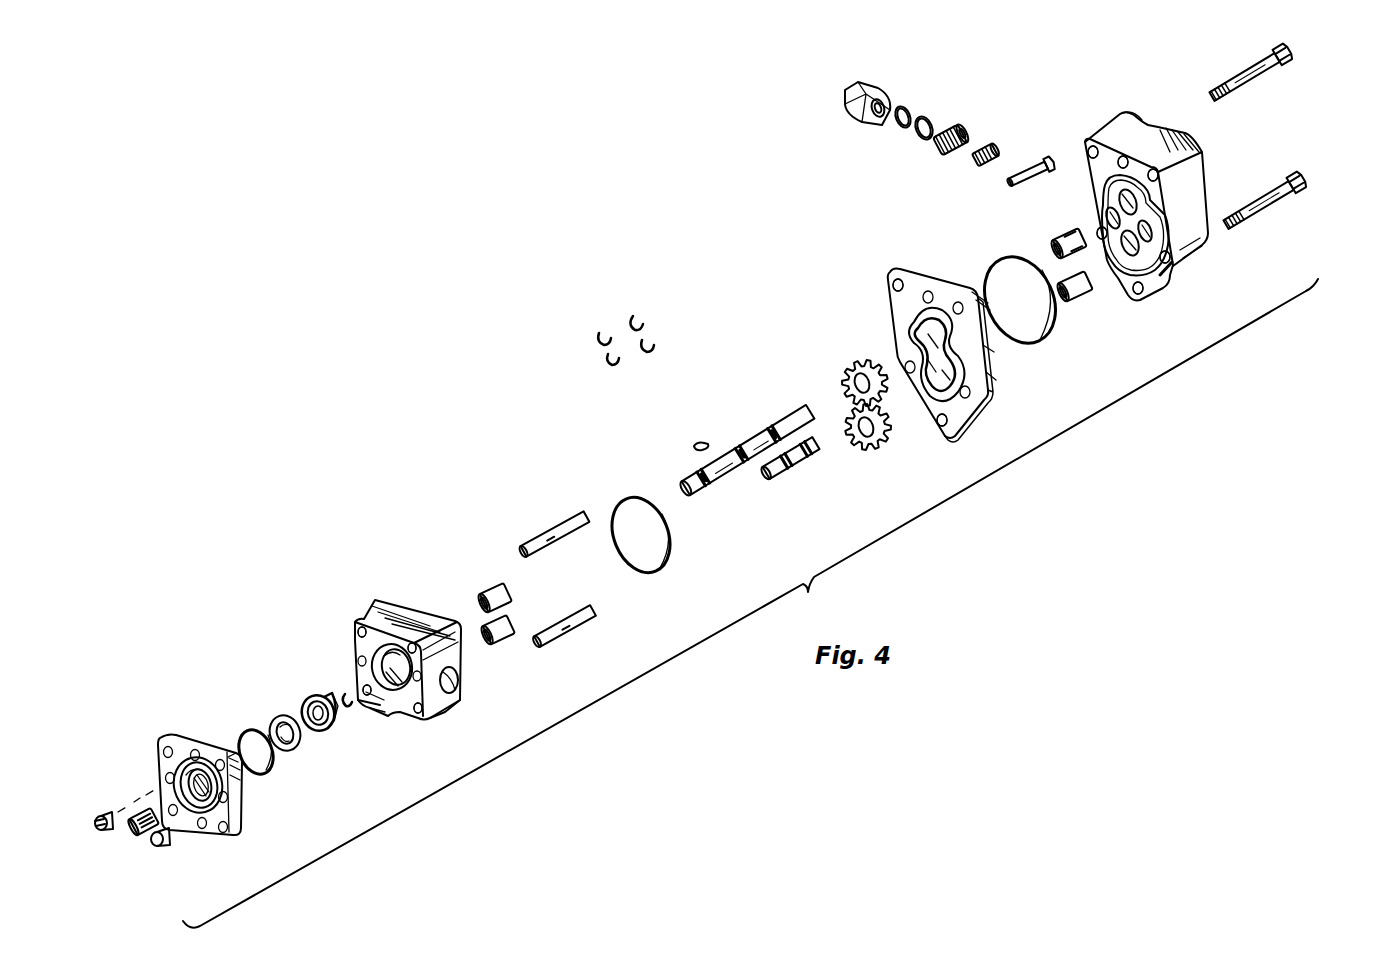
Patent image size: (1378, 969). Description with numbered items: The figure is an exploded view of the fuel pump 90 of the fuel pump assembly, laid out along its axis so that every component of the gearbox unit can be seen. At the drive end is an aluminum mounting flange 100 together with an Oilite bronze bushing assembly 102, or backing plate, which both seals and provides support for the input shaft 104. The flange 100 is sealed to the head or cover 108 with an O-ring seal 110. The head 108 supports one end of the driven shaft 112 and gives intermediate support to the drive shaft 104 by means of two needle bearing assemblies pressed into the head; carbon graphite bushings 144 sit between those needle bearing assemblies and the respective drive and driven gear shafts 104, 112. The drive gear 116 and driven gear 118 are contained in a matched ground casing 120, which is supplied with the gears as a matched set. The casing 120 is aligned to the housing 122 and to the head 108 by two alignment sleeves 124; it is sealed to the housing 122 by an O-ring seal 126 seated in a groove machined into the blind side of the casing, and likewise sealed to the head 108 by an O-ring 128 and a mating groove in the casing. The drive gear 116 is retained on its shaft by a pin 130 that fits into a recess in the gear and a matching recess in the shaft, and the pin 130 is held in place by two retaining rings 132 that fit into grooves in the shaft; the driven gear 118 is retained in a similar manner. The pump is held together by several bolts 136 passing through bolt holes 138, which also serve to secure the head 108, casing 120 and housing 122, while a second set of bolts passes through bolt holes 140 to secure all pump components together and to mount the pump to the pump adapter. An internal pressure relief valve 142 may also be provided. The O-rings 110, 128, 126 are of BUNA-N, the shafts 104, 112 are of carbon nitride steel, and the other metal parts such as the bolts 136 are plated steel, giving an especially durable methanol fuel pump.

The fuel pump 90 is at (508, 322).
The mounting flange 100 is at (213, 838).
The bushing assembly 102 is at (267, 787).
The input shaft 104 is at (724, 480).
The head 108 is at (450, 700).
The O-ring seal 110 is at (244, 735).
The driven shaft 112 is at (800, 468).
The drive gear 116 is at (860, 362).
The driven gear 118 is at (885, 440).
The casing 120 is at (992, 384).
The housing 122 is at (1193, 232).
The alignment sleeves 124 is at (553, 520).
The O-ring seal 126 is at (1050, 340).
The O-ring 128 is at (666, 552).
The pin 130 is at (700, 440).
The retaining rings 132 is at (600, 335).
The bolts 136 is at (1272, 66).
The bolt holes 138 is at (895, 283).
The bolt holes 140 is at (405, 640).
The internal pressure relief valve 142 is at (905, 97).
The bushings 144 is at (480, 625).